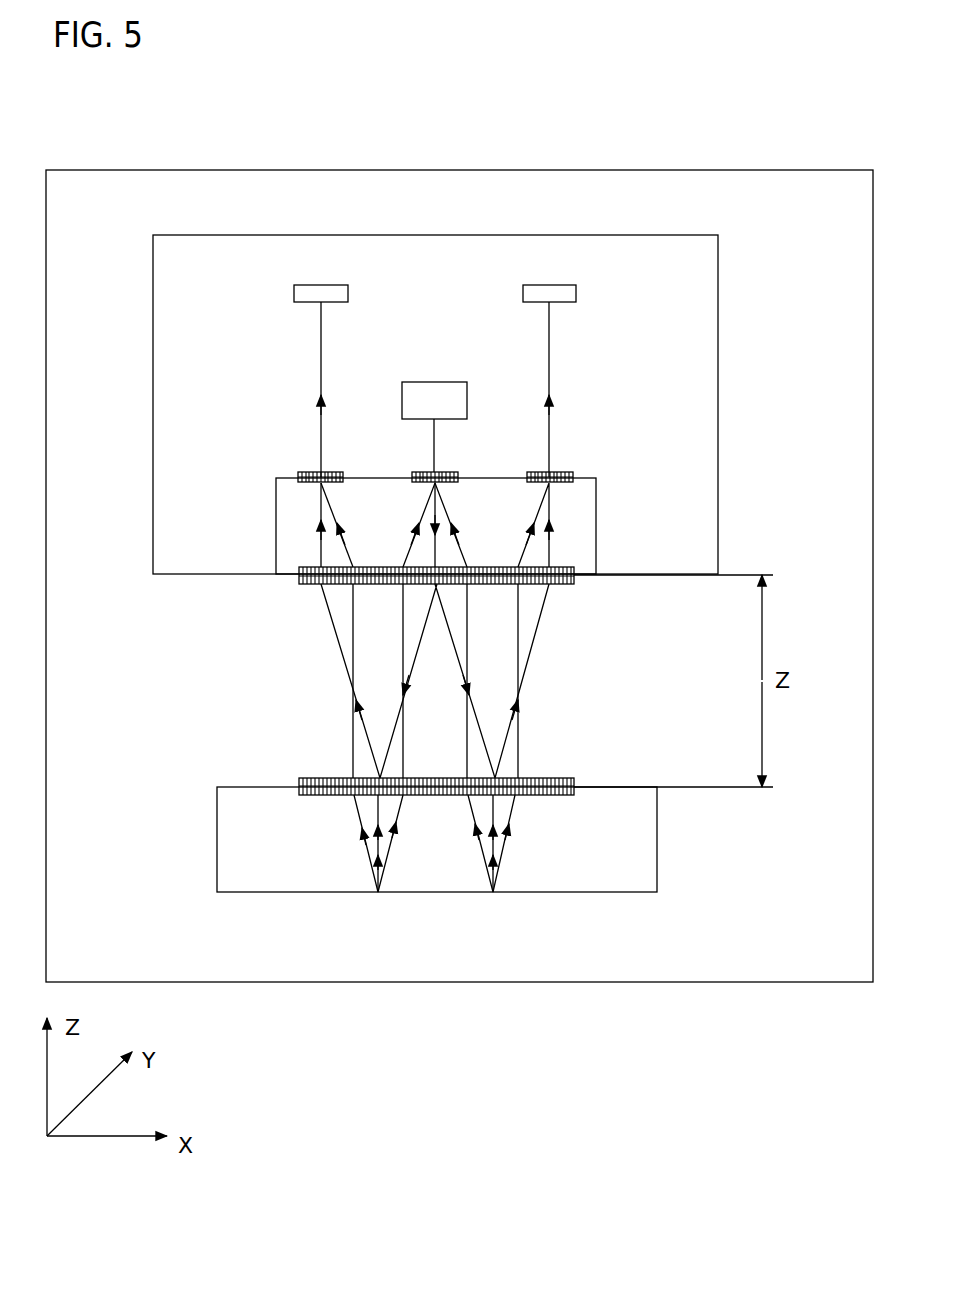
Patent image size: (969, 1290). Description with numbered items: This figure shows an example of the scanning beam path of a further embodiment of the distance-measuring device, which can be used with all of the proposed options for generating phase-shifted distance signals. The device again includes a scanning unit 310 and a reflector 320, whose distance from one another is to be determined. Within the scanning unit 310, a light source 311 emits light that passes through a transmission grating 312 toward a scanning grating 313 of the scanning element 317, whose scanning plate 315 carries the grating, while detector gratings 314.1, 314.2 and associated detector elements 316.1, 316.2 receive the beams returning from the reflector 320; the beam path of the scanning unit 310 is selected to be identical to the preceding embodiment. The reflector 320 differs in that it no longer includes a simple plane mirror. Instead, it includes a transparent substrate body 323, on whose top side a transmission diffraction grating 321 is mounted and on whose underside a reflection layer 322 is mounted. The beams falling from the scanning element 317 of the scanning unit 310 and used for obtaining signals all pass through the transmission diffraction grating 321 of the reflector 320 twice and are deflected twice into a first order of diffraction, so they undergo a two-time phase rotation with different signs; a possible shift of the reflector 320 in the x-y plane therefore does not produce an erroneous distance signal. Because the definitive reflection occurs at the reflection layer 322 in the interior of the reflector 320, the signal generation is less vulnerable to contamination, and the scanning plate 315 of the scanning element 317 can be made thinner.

The scanning unit 310 is at (153, 556).
The light source 311 is at (447, 388).
The transmission grating 312 is at (442, 472).
The scanning grating 313 is at (563, 588).
The first detector grating 314.1 is at (300, 472).
The second detector grating 314.2 is at (557, 472).
The scanning plate 315 is at (582, 512).
The first detector element 316.1 is at (334, 291).
The second detector element 316.2 is at (562, 291).
The scanning element 317 is at (268, 508).
The reflector 320 is at (300, 585).
The transmission diffraction grating 321 is at (310, 777).
The reflection layer 322 is at (278, 892).
The transparent substrate body 323 is at (232, 858).